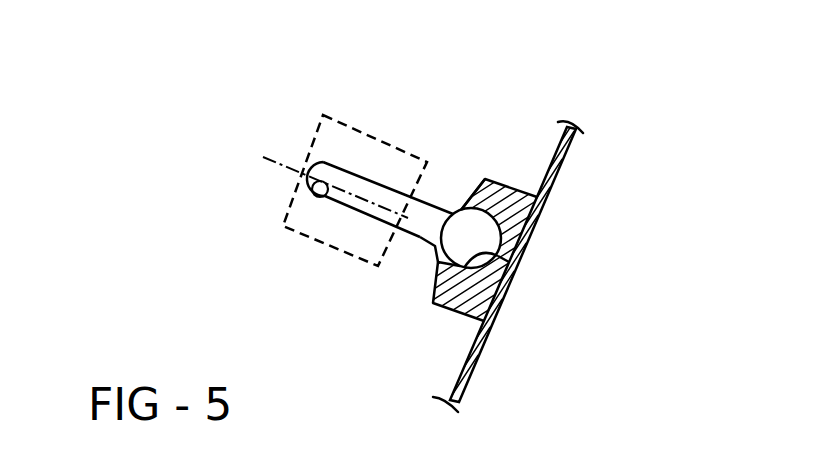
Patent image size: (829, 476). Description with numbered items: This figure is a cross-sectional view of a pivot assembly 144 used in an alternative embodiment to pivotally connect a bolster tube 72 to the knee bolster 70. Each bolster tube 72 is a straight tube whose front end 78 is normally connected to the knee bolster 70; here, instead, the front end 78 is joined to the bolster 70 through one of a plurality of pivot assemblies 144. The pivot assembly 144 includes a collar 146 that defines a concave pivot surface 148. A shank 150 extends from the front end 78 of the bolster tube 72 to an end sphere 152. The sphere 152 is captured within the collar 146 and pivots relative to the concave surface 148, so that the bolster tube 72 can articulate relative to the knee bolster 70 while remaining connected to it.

The knee bolster 70 is at (561, 159).
The bolster tube 72 is at (342, 120).
The front end 78 is at (427, 171).
The pivot assembly 144 is at (452, 204).
The collar 146 is at (442, 306).
The concave pivot surface 148 is at (497, 258).
The shank 150 is at (417, 244).
The end sphere 152 is at (478, 170).